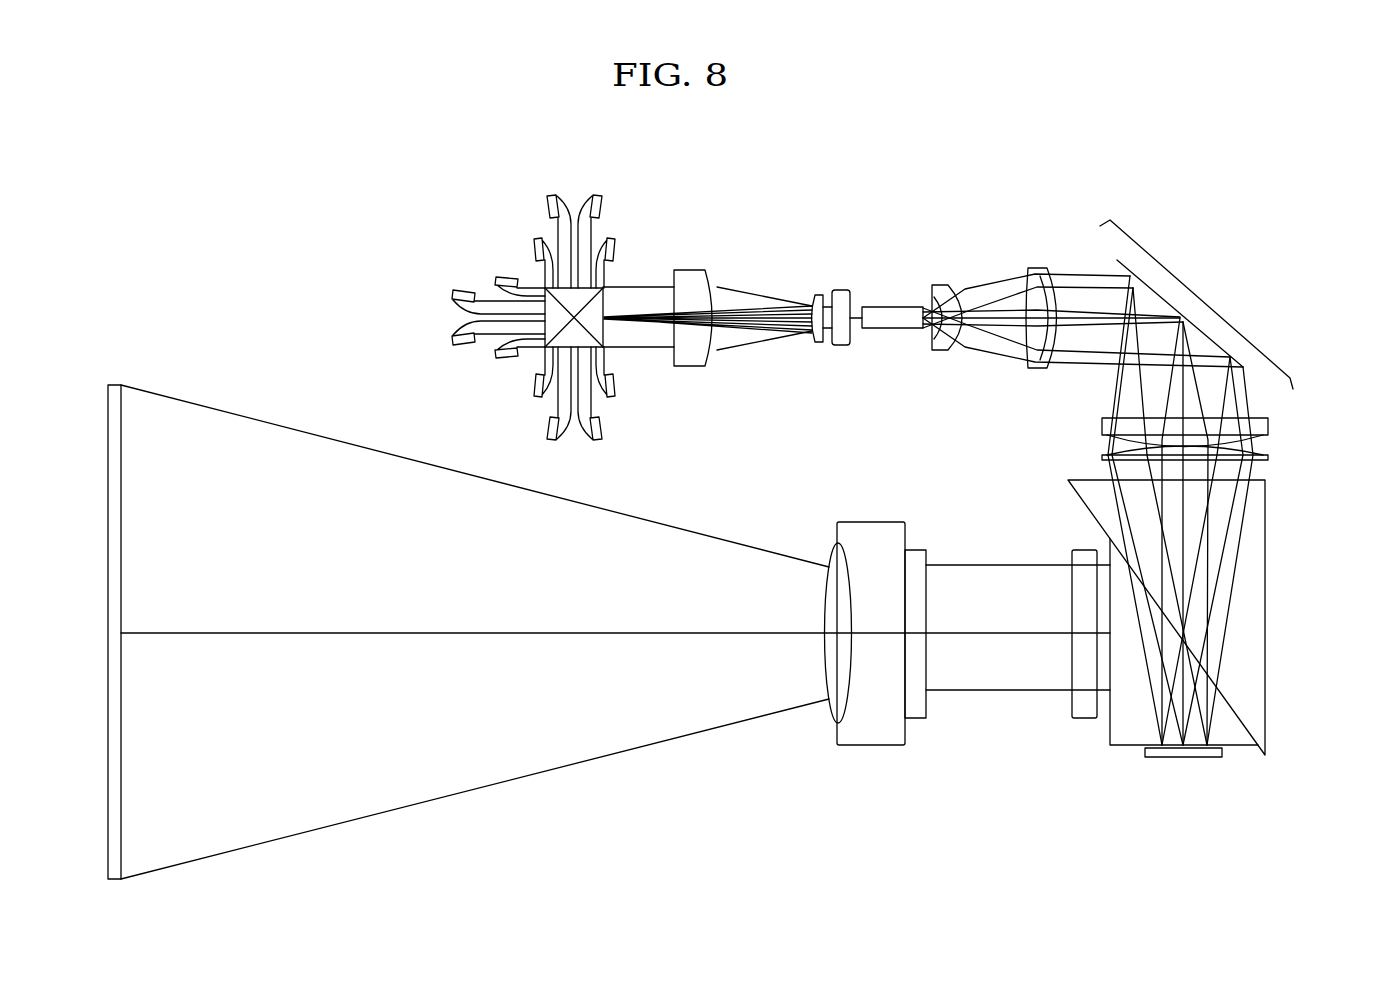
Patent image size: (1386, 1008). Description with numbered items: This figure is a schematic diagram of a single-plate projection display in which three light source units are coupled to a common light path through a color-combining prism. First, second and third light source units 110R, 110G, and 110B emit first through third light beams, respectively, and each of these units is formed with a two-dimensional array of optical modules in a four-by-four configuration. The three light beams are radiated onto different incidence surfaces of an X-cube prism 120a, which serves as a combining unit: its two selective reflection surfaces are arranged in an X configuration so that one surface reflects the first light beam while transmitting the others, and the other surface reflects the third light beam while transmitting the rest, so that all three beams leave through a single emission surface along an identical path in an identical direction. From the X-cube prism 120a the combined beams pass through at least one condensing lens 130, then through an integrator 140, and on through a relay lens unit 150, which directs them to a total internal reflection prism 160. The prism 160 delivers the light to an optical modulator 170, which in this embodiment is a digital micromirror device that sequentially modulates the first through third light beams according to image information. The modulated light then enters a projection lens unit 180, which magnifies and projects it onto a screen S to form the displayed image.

The first light source unit 110R is at (558, 223).
The second light source unit 110G is at (452, 315).
The third light source unit 110B is at (546, 364).
The X-cube prism 120a is at (604, 288).
The condensing lens 130 is at (855, 259).
The integrator 140 is at (887, 331).
The relay lens unit 150 is at (1196, 292).
The total internal reflection (TIR) prism 160 is at (1268, 625).
The optical modulator 170 is at (1201, 758).
The projection lens unit 180 is at (1093, 777).
The screen S is at (107, 837).